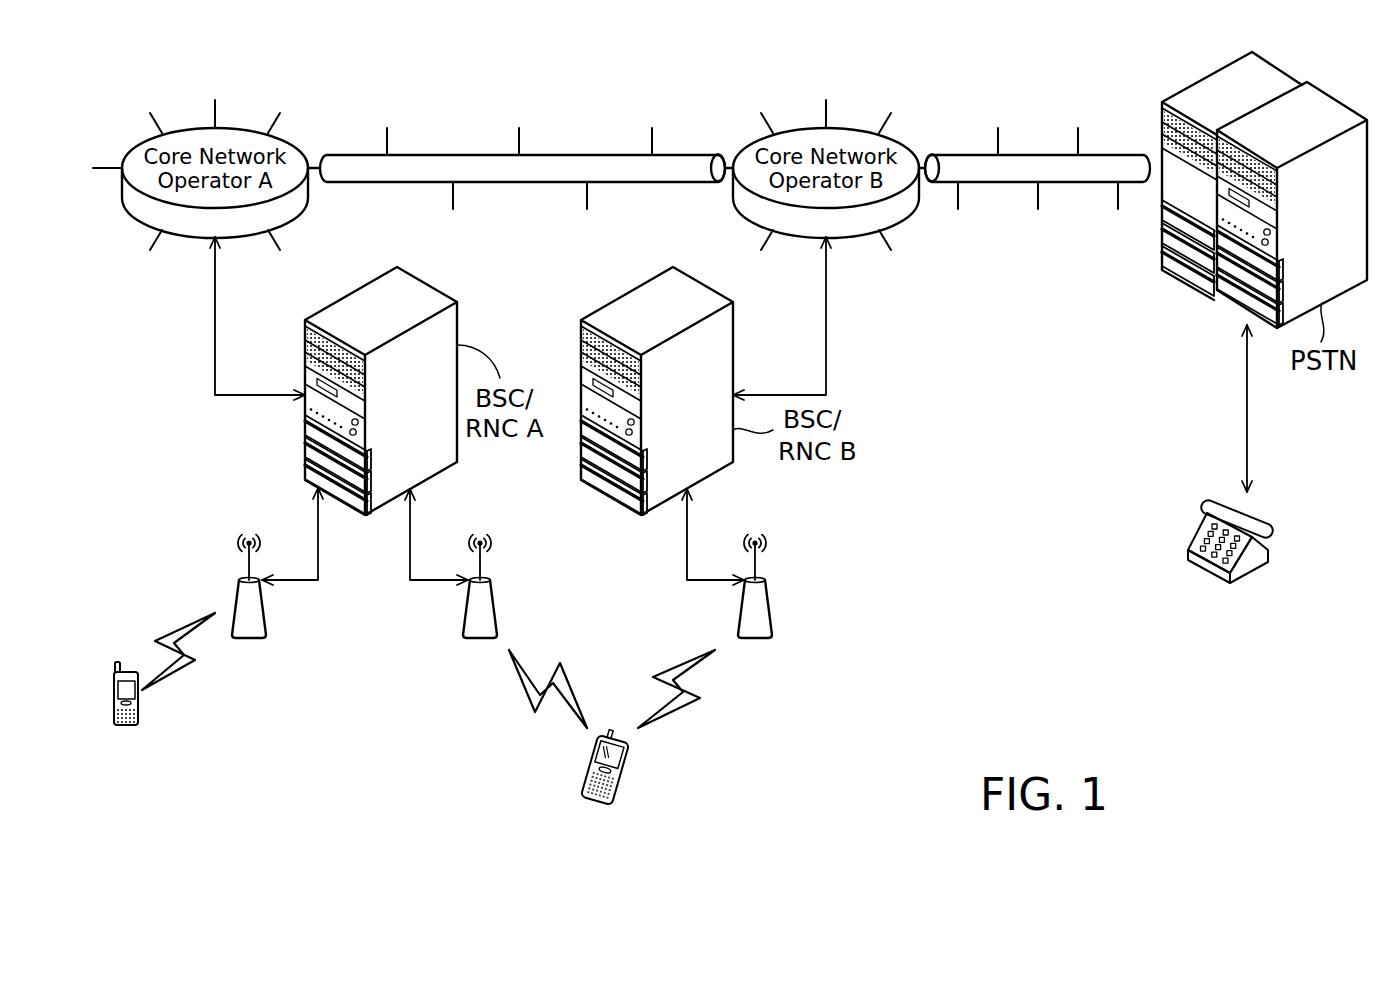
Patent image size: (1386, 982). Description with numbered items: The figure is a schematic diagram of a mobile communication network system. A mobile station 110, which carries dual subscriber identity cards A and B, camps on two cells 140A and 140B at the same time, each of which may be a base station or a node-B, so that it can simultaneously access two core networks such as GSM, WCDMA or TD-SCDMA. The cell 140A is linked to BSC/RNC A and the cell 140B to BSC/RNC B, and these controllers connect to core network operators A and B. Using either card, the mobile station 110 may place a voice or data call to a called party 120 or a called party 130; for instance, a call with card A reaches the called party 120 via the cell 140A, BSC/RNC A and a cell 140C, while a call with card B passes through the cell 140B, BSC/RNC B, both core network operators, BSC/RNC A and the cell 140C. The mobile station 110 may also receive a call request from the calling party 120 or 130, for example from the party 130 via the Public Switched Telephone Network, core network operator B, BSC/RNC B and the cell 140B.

The mobile station 110 is at (627, 773).
The called party 120 is at (139, 716).
The called party 130 is at (1270, 548).
The cell 140A is at (497, 606).
The cell 140B is at (773, 606).
The cell 140C is at (265, 606).